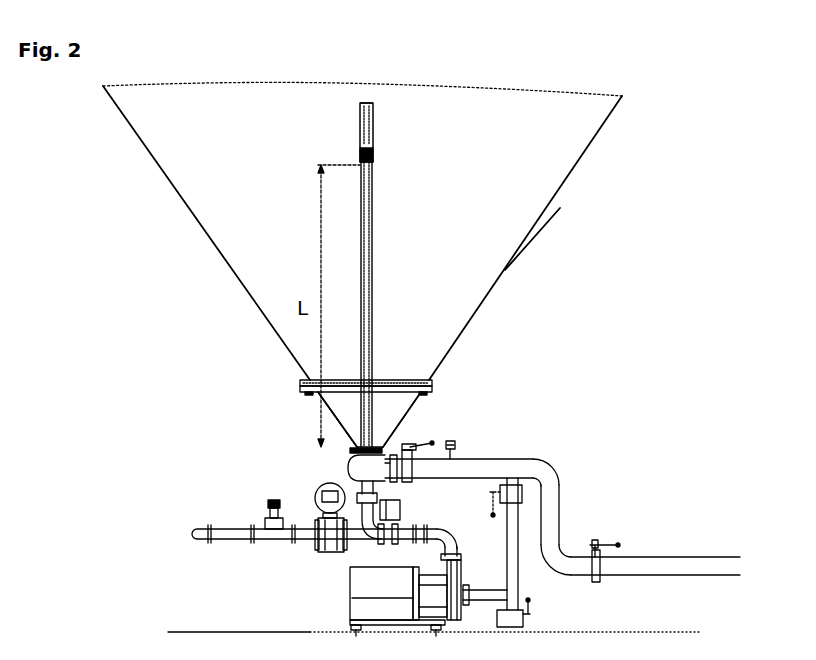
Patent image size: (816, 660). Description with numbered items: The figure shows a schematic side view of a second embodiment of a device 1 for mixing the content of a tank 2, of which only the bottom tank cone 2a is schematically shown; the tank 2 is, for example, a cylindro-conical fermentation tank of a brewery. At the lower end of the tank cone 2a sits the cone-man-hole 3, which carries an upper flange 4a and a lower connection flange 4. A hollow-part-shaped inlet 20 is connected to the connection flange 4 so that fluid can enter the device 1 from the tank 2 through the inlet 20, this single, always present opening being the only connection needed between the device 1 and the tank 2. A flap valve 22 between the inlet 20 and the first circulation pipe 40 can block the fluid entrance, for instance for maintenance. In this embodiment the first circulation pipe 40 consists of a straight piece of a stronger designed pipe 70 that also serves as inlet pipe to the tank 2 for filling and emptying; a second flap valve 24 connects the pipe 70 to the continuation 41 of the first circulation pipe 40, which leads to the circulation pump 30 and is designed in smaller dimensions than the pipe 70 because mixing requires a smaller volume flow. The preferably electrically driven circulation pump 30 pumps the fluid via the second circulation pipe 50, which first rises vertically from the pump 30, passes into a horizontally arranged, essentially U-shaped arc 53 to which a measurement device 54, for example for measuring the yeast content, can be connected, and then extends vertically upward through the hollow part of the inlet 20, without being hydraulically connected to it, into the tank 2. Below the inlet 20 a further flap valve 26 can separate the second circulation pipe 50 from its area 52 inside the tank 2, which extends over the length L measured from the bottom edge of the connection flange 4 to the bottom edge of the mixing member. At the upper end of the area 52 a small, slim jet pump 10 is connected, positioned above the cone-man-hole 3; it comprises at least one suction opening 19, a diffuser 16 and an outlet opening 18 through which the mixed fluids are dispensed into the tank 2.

The device 1 is at (141, 292).
The tank 2 is at (638, 58).
The tank cone 2a is at (502, 268).
The cone-man-hole 3 is at (390, 428).
The connection flange 4 is at (373, 447).
The upper flange 4a is at (300, 385).
The jet pump 10 is at (355, 128).
The diffuser 16 is at (370, 125).
The outlet opening 18 is at (367, 103).
The suction opening 19 is at (372, 152).
The inlet 20 is at (360, 462).
The flap valve 22 is at (432, 443).
The second flap valve 24 is at (518, 495).
The further flap valve 26 is at (363, 495).
The circulation pump 30 is at (378, 604).
The first circulation pipe 40 is at (488, 462).
The continuation of the first circulation pipe 41 is at (515, 555).
The second circulation pipe 50 is at (441, 531).
The area of the second circulation pipe 52 is at (371, 258).
The U-shaped arc 53 is at (237, 530).
The measurement device 54 is at (332, 534).
The pipe 70 is at (630, 553).